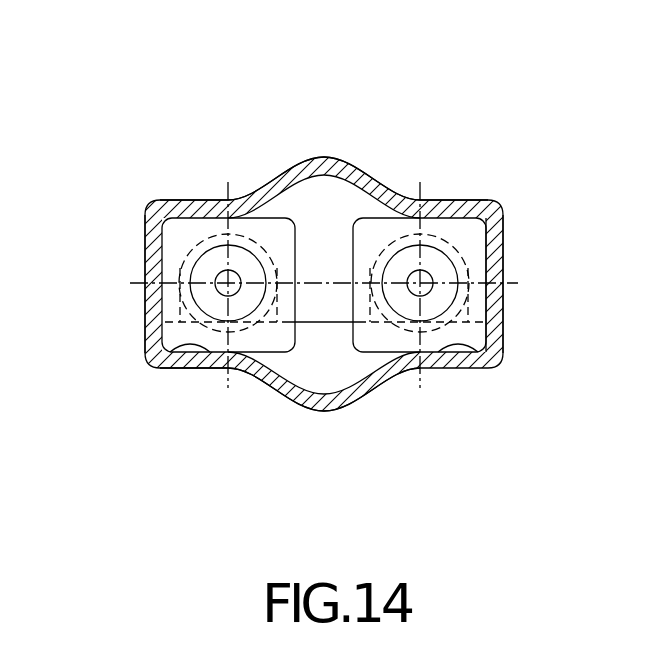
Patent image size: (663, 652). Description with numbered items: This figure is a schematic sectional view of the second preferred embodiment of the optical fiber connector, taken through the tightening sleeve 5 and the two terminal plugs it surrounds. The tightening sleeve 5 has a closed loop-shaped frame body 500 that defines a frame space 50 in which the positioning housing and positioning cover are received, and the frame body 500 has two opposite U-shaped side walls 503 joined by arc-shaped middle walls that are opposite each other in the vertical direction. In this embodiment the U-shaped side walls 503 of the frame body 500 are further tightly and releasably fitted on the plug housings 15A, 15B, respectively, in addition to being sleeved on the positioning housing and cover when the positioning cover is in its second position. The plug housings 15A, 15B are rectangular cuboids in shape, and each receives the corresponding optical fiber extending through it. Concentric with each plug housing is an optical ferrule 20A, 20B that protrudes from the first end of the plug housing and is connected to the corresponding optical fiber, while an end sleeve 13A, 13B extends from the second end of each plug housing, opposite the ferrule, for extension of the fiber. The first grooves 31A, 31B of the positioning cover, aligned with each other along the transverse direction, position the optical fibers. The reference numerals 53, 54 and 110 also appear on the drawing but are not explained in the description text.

The tightening sleeve 5 is at (331, 252).
The frame space 50 is at (370, 172).
The frame body 500 is at (327, 412).
The U-shaped side walls 503 is at (162, 200).
The bottom flat wall portion 53 is at (170, 360).
The side wall 54 is at (492, 243).
The insulative body section 110 is at (192, 200).
The optical ferrule 20A is at (218, 273).
The optical ferrule 20B is at (428, 275).
The end sleeve 13A is at (180, 262).
The end sleeve 13B is at (490, 263).
The plug housing 15A is at (160, 295).
The plug housing 15B is at (487, 298).
The first groove 31A is at (145, 355).
The first groove 31B is at (480, 346).